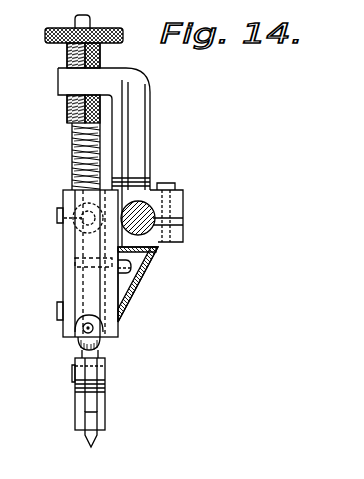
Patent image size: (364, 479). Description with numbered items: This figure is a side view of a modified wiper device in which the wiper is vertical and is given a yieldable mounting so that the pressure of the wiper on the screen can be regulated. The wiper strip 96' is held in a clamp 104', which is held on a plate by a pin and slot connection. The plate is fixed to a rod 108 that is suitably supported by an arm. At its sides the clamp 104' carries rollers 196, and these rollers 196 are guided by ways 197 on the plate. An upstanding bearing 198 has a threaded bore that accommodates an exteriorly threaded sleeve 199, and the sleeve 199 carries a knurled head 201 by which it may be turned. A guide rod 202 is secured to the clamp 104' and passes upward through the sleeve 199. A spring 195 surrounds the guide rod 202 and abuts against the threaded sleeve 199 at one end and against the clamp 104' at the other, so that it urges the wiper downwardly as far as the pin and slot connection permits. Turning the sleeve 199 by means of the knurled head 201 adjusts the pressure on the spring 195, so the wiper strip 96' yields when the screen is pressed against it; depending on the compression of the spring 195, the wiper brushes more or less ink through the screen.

The guide rod 202 is at (91, 21).
The knurled head 201 is at (46, 40).
The exteriorly threaded sleeve 199 is at (70, 110).
The upstanding bearing 198 is at (147, 138).
The rod 108 is at (152, 236).
The ways 197 is at (64, 283).
The spring 195 is at (120, 330).
The rollers 196 is at (101, 343).
The clamp 104' is at (122, 394).
The wiper strip 96' is at (119, 432).